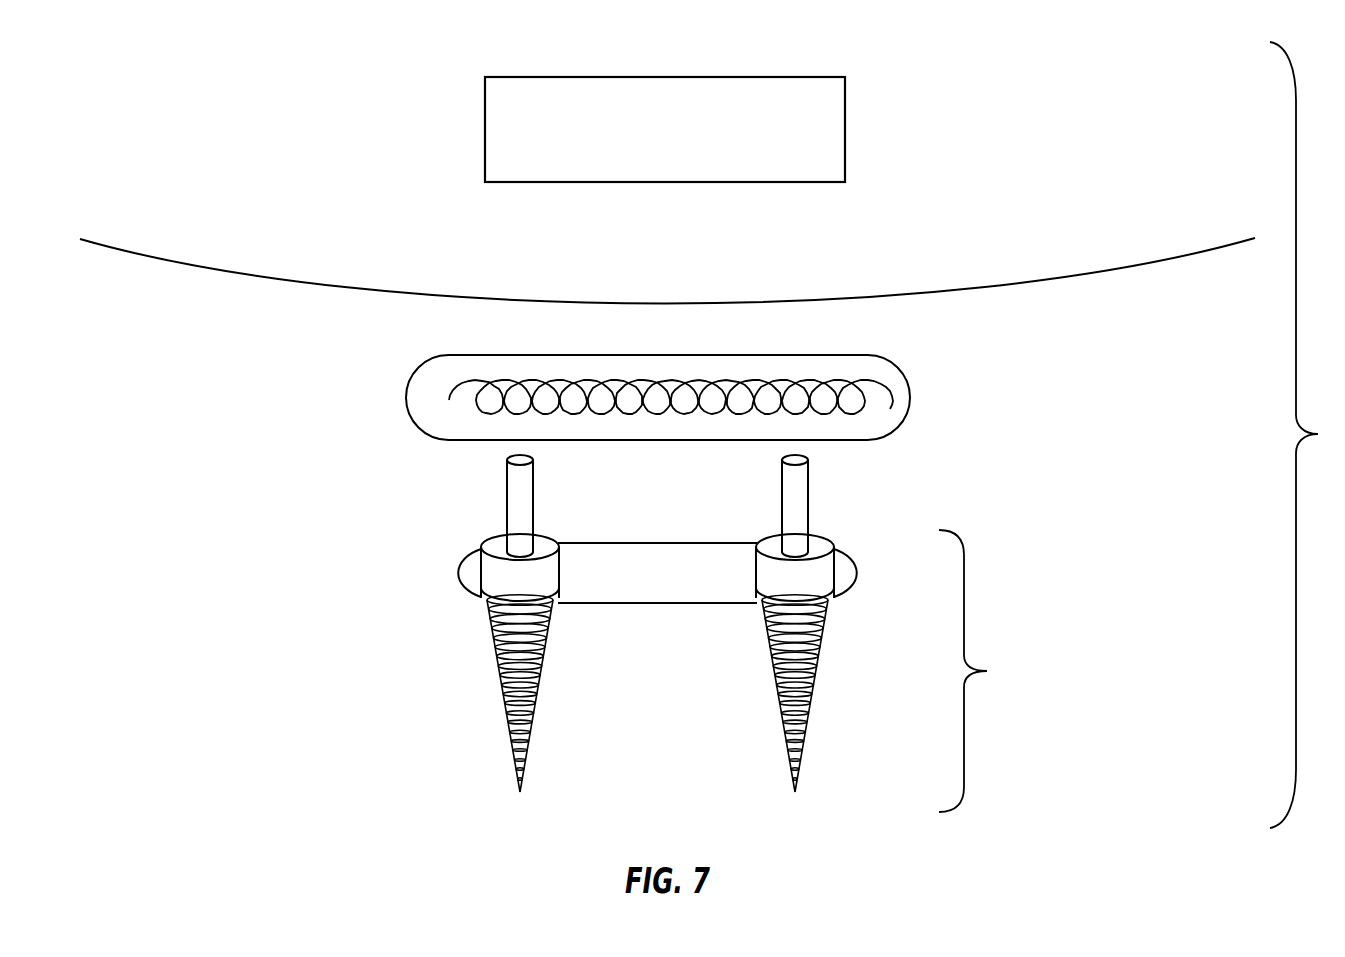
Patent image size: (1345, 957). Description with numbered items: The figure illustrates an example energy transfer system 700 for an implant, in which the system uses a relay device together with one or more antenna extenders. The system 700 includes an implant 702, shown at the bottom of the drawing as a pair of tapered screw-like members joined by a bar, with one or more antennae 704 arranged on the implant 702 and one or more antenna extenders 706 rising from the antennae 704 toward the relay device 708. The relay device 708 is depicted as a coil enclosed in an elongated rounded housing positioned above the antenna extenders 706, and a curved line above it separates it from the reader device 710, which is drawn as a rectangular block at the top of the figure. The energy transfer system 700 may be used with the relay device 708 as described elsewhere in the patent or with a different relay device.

The system 700 is at (250, 106).
The implant 702 is at (757, 671).
The antennae 704 is at (498, 575).
The antenna extenders 706 is at (507, 490).
The relay device 708 is at (877, 385).
The reader device 710 is at (847, 127).